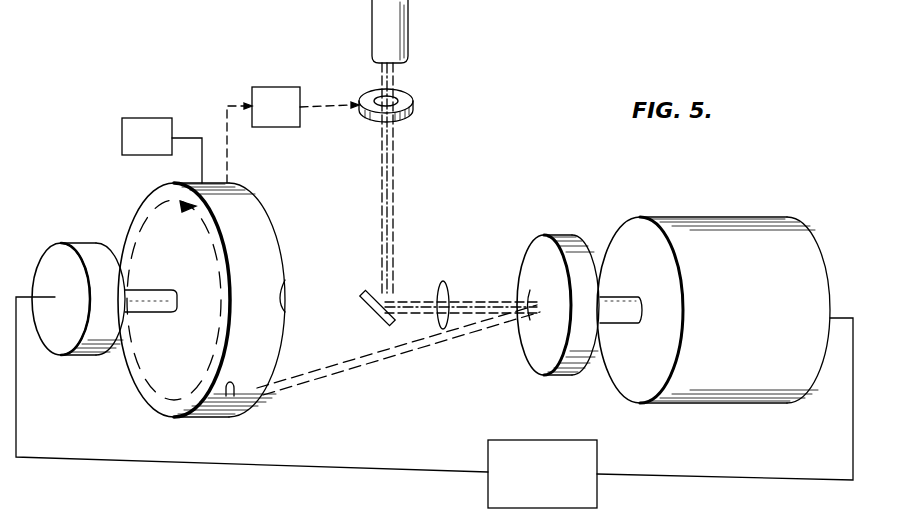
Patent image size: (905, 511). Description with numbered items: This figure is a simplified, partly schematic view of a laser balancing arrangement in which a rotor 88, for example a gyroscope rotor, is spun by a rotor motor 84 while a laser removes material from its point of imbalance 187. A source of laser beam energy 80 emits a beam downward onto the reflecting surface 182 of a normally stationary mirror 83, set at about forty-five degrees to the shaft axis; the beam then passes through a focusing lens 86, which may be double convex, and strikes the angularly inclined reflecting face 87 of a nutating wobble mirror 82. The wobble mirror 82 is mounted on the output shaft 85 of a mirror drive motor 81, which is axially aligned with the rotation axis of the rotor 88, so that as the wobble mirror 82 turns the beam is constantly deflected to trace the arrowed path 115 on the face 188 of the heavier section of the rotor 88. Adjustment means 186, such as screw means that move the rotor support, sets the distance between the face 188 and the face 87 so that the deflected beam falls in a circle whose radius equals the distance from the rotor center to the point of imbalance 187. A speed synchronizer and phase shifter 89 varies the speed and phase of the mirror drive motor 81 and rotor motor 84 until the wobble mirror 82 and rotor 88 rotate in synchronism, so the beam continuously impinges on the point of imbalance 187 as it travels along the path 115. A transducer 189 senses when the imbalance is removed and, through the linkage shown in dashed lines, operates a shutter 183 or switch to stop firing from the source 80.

The source of laser beam energy 80 is at (396, 46).
The mirror drive motor 81 is at (760, 318).
The nutating wobble mirror 82 is at (571, 250).
The stationary mirror 83 is at (376, 306).
The rotor motor 84 is at (88, 344).
The output shaft 85 is at (622, 322).
The focusing lens 86 is at (448, 290).
The reflecting face 87 is at (552, 330).
The rotor 88 is at (287, 250).
The speed synchronizer and phase shifter 89 is at (597, 498).
The path 115 is at (143, 377).
The reflecting surface 182 is at (380, 297).
The shutter 183 is at (413, 104).
The adjustment means 186 is at (172, 101).
The point of imbalance 187 is at (214, 406).
The face 188 is at (283, 292).
The transducer 189 is at (281, 92).